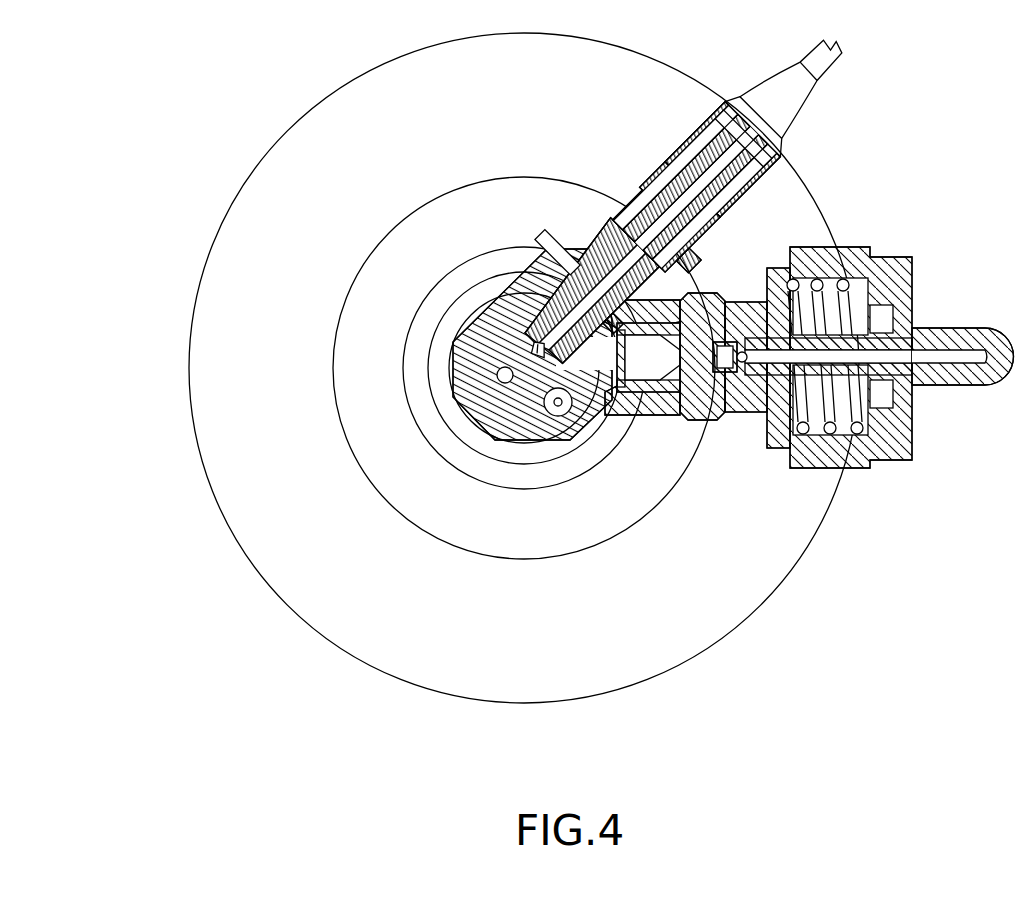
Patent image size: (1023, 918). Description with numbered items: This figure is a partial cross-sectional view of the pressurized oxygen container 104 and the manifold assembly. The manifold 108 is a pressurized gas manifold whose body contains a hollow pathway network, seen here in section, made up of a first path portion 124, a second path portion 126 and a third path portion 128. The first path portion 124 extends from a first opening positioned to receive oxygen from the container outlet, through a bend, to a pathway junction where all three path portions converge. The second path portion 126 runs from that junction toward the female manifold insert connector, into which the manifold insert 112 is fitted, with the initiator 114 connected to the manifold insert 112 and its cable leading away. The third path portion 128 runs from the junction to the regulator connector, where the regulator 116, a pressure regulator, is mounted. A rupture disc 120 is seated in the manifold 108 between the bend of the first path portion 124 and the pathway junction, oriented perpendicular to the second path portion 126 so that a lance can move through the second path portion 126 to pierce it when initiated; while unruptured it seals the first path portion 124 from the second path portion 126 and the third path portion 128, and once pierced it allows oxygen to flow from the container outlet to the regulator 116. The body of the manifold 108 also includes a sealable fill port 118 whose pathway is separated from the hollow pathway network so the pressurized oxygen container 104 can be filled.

The pressurized oxygen container 104 is at (782, 215).
The manifold 108 is at (520, 412).
The manifold insert 112 is at (583, 183).
The initiator 114 is at (787, 98).
The regulator 116 is at (793, 467).
The sealable fill port 118 is at (558, 416).
The rupture disc 120 is at (520, 345).
The first path portion 124 is at (495, 355).
The second path portion 126 is at (530, 333).
The third path portion 128 is at (593, 358).